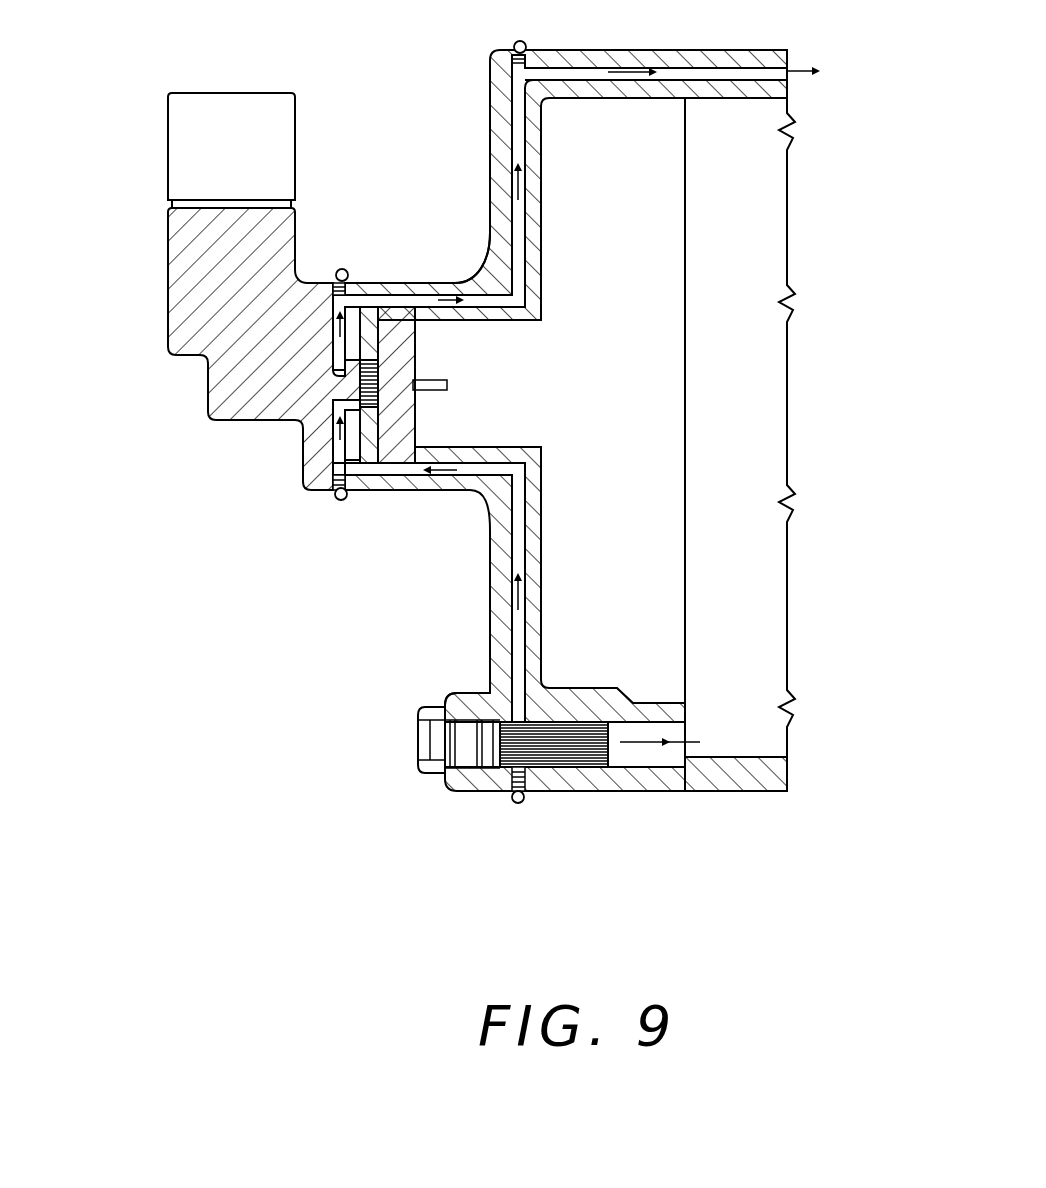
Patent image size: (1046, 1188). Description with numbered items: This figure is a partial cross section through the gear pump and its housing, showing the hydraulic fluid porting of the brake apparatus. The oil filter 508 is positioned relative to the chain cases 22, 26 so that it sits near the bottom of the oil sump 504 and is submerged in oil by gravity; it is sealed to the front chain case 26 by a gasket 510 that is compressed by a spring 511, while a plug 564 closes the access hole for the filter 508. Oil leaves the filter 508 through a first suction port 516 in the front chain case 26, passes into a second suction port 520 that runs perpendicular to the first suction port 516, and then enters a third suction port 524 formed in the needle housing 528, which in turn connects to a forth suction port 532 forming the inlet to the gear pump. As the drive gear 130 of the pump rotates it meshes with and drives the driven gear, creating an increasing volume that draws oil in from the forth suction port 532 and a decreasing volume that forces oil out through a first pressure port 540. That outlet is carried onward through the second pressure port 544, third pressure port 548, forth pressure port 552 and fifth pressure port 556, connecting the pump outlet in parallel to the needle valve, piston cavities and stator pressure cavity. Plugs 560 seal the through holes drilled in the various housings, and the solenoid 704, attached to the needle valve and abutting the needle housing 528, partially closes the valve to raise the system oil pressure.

The chain case 22 is at (753, 52).
The front chain case 26 is at (596, 793).
The drive gear 130 is at (447, 383).
The oil sump 504 is at (790, 738).
The oil filter 508 is at (606, 793).
The gasket 510 is at (615, 770).
The spring 511 is at (476, 692).
The first suction port 516 is at (510, 623).
The second suction port 520 is at (476, 489).
The third suction port 524 is at (332, 454).
The needle housing 528 is at (172, 282).
The forth suction port 532 is at (383, 431).
The first pressure port 540 is at (368, 360).
The second pressure port 544 is at (324, 287).
The third pressure port 548 is at (447, 283).
The forth pressure port 552 is at (512, 113).
The fifth pressure port 556 is at (652, 68).
The plugs 560 is at (517, 40).
The plug 564 is at (418, 745).
The solenoid 704 is at (167, 146).